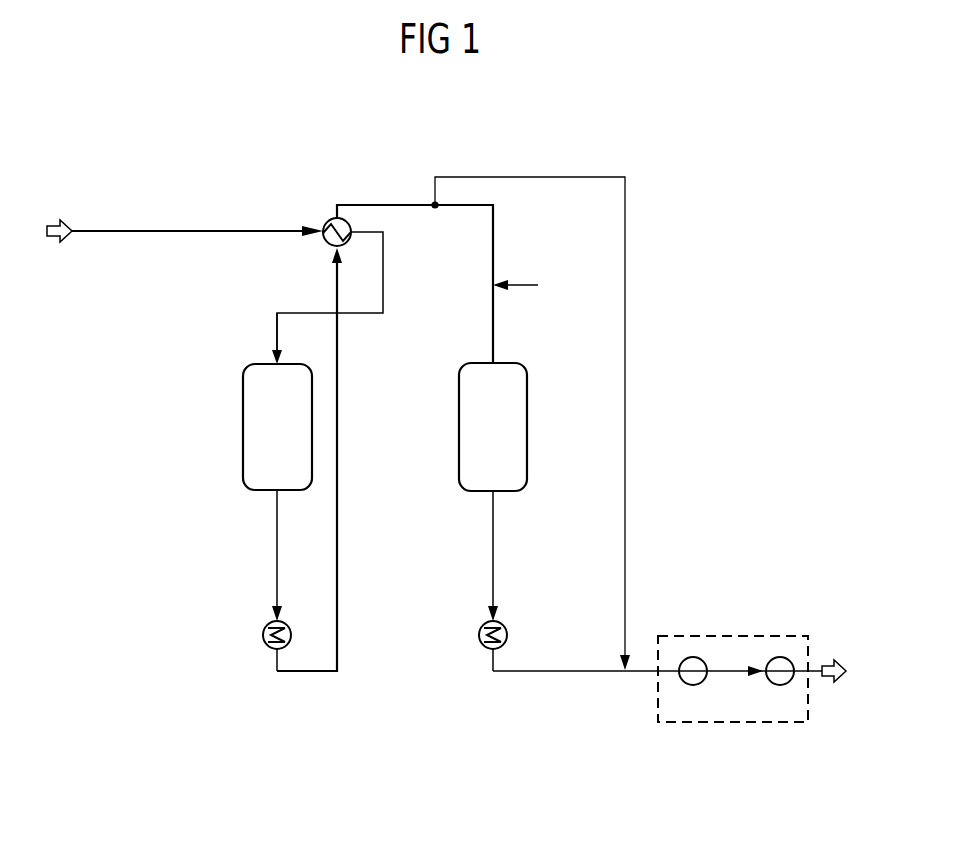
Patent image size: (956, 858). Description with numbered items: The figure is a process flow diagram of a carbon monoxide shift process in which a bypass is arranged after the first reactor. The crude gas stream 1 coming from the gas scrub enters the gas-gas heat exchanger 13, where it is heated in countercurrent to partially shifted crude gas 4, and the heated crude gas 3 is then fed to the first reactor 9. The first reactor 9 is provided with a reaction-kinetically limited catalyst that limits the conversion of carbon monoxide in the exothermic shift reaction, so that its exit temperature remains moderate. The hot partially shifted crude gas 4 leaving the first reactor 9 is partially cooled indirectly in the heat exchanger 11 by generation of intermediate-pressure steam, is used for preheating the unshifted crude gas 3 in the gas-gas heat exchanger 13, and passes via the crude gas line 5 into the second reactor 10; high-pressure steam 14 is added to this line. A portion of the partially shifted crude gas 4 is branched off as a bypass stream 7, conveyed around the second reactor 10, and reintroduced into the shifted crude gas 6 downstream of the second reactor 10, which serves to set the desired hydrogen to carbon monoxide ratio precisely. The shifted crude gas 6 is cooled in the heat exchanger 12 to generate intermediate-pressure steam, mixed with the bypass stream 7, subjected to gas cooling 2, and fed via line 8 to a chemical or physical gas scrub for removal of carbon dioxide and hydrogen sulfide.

The crude gas stream 1 is at (52, 221).
The gas cooling 2 is at (743, 635).
The crude gas to the first reactor 3 is at (277, 331).
The partially shifted crude gas 4 is at (277, 547).
The crude gas line to the second reactor 5 is at (493, 324).
The shifted crude gas after the second reactor 6 is at (493, 547).
The bypass stream 7 is at (625, 299).
The shifted crude gas line to the gas scrub 8 is at (829, 660).
The first reactor 9 is at (243, 414).
The second reactor 10 is at (459, 414).
The heat exchanger 11 is at (262, 636).
The heat exchanger 12 is at (478, 636).
The gas-gas heat exchanger 13 is at (327, 221).
The high-pressure steam 14 is at (531, 284).